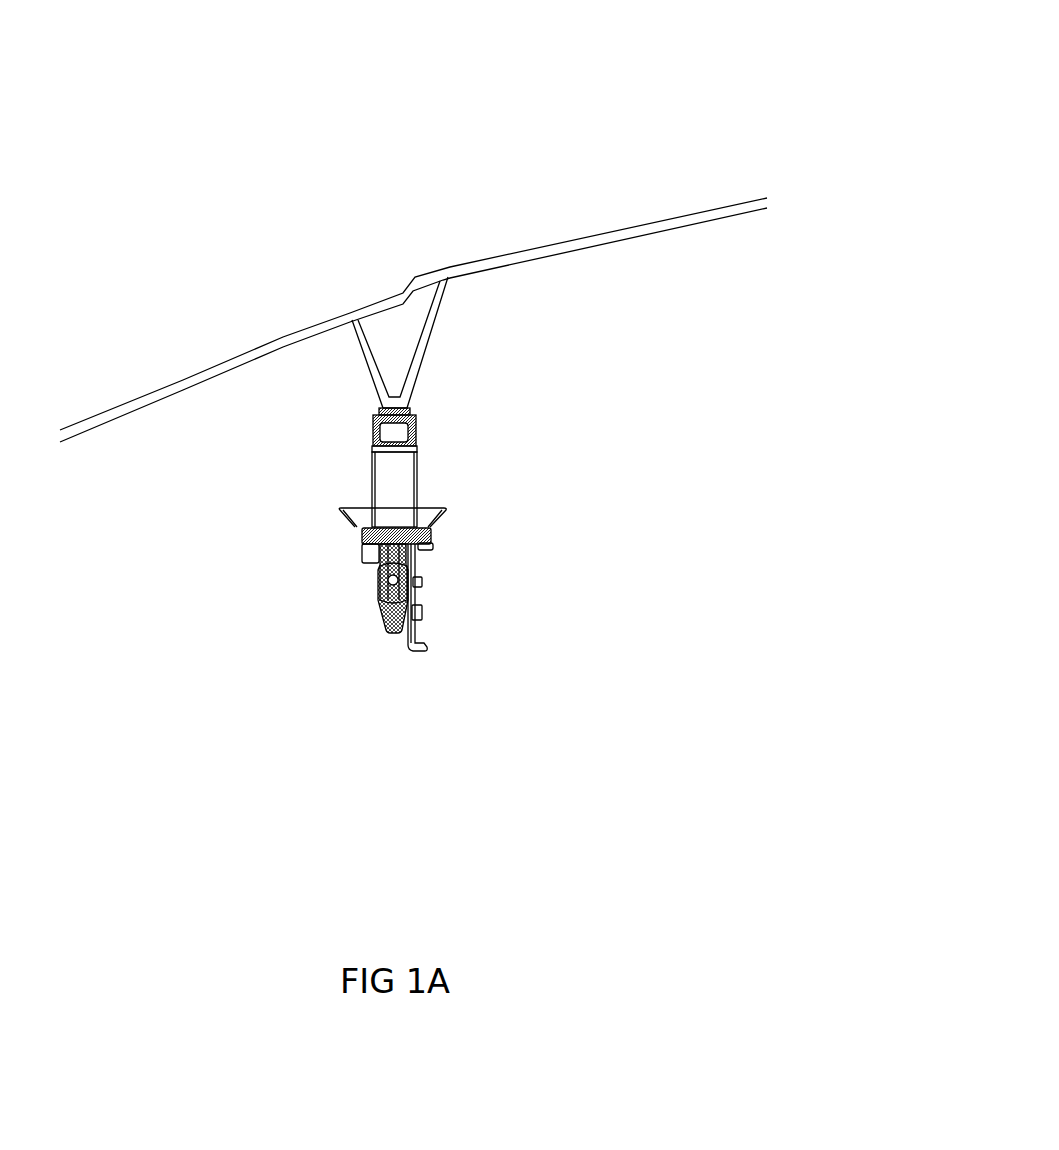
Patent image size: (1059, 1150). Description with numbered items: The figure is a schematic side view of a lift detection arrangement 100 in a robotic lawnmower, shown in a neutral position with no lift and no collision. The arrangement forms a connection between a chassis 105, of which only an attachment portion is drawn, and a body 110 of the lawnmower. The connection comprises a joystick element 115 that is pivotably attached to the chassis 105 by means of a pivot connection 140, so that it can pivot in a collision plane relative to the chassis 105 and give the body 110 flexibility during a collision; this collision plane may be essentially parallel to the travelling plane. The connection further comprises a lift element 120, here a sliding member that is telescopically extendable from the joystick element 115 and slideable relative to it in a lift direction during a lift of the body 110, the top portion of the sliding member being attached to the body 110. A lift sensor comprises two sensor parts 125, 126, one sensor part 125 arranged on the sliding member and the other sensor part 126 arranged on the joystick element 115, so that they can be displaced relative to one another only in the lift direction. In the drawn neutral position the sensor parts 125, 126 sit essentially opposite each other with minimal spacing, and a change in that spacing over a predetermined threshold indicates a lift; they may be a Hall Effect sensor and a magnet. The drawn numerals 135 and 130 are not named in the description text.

The lift detection arrangement 100 is at (277, 121).
The body 110 is at (515, 250).
The joystick element 115 is at (417, 497).
The chassis 105 is at (348, 517).
The pivot connection 140 is at (428, 527).
The lift element 120 is at (380, 568).
The valve 135 is at (380, 593).
The sensor part 125 is at (380, 625).
The sensor part 126 is at (422, 610).
The actuator arm 130 is at (410, 637).